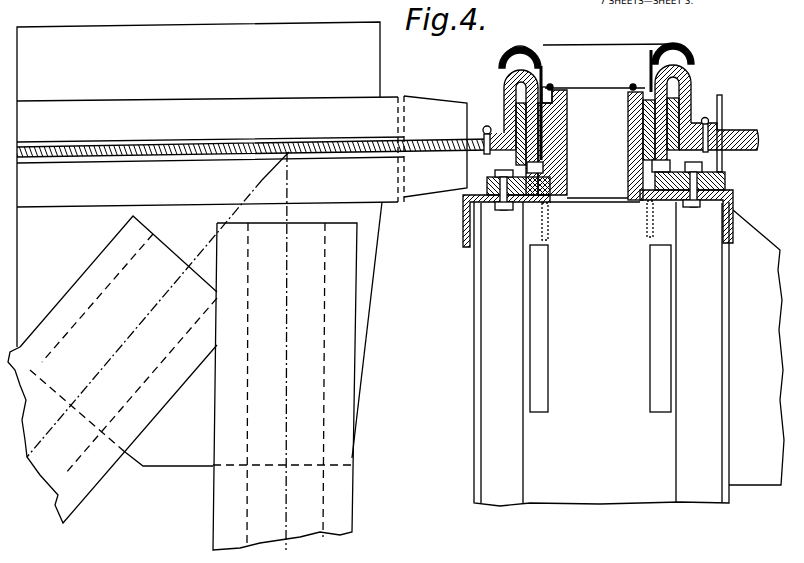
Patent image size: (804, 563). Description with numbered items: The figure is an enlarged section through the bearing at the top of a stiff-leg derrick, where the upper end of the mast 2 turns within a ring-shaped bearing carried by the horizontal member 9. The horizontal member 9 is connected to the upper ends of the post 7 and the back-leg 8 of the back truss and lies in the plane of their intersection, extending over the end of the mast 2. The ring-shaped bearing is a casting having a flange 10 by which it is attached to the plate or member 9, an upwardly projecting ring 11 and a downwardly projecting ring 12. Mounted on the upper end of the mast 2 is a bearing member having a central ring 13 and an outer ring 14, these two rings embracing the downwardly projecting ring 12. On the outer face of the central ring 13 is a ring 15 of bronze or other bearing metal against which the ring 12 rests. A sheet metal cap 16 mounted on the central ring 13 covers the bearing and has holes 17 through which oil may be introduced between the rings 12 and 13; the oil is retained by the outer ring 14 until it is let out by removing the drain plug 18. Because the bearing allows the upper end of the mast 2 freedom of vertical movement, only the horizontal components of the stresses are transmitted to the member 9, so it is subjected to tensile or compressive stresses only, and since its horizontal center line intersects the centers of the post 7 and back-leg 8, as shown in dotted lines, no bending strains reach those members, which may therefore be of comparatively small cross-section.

The mast 2 is at (629, 353).
The post 7 is at (340, 478).
The back-leg 8 is at (82, 492).
The horizontal member 9 is at (312, 152).
The flange 10 is at (478, 131).
The upwardly projecting ring 11 is at (503, 108).
The downwardly projecting ring 12 is at (563, 108).
The central ring 13 is at (568, 170).
The outer ring 14 is at (563, 148).
The ring of bronze or other bearing metal 15 is at (565, 127).
The sheet metal cap 16 is at (540, 60).
The holes 17 is at (522, 46).
The drain plug 18 is at (517, 162).